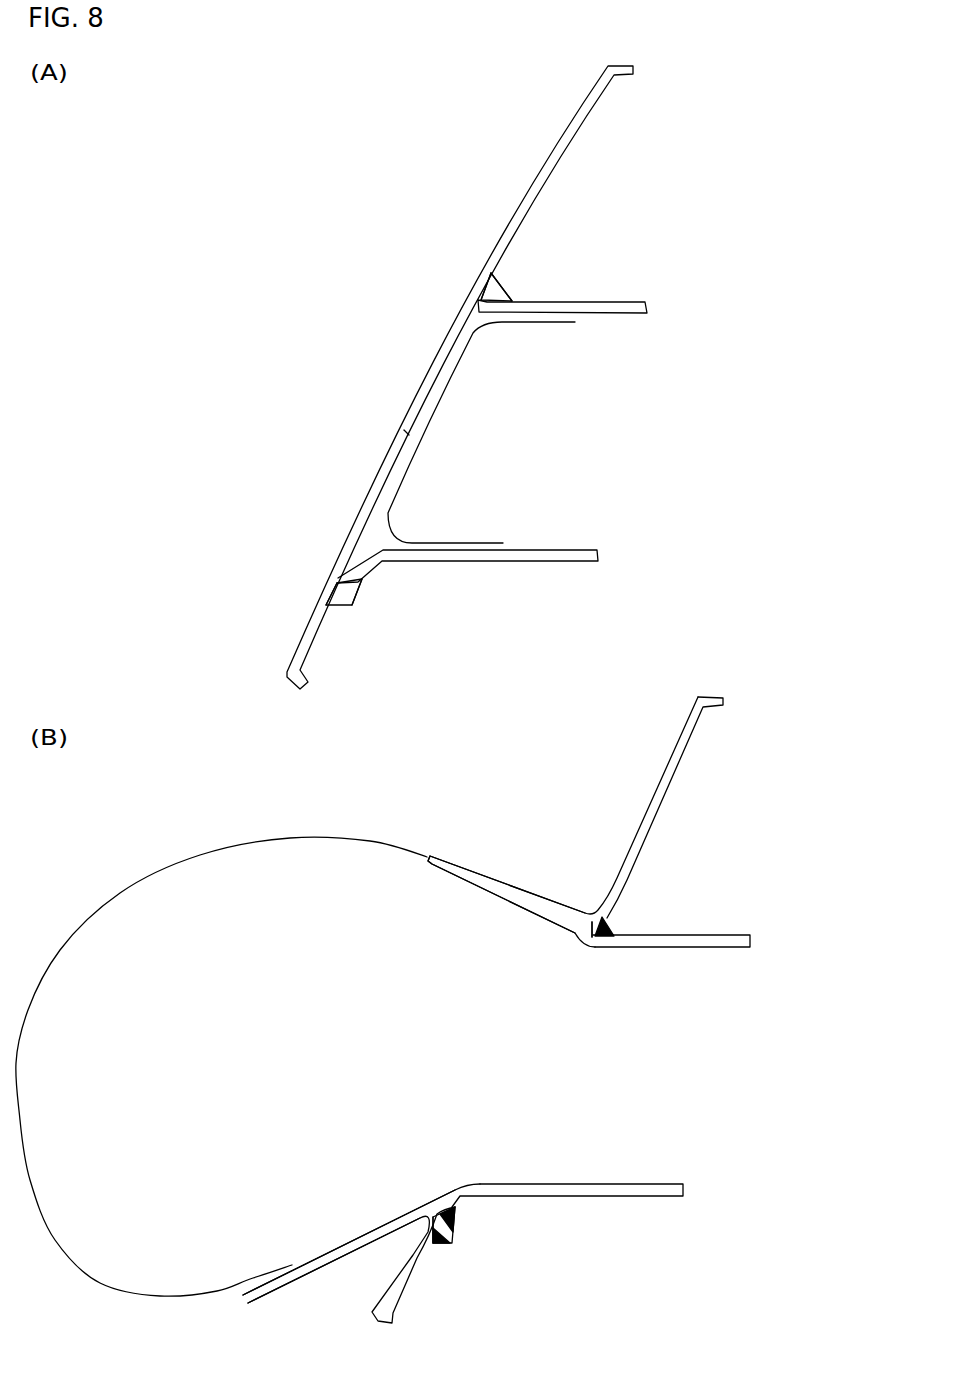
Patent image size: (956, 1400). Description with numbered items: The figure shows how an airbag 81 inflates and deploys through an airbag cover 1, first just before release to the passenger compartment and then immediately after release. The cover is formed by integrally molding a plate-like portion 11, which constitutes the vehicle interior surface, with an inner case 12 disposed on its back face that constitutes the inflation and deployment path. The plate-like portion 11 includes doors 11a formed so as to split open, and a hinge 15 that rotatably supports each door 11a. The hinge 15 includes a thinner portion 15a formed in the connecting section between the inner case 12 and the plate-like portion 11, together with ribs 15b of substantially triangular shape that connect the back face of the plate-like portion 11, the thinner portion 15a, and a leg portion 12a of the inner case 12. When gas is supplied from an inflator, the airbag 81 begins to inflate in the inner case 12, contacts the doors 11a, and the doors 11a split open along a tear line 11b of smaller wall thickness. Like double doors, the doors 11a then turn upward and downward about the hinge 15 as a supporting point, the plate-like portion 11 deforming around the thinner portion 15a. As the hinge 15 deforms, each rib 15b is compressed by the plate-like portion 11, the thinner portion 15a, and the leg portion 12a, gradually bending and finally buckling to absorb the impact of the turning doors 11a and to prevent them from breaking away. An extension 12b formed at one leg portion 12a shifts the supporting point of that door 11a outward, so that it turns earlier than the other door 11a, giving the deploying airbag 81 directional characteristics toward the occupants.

The interior trim assembly 1 is at (455, 228).
The plate-like portion 11 is at (543, 162).
The door 11a is at (432, 357).
The tear line 11b is at (407, 432).
The inner case 12 is at (538, 570).
The leg portion 12a is at (617, 316).
The extension 12b is at (380, 563).
The hinge 15 is at (528, 278).
The thinner portion 15a is at (493, 270).
The rib 15b is at (500, 298).
The airbag 81 is at (483, 342).